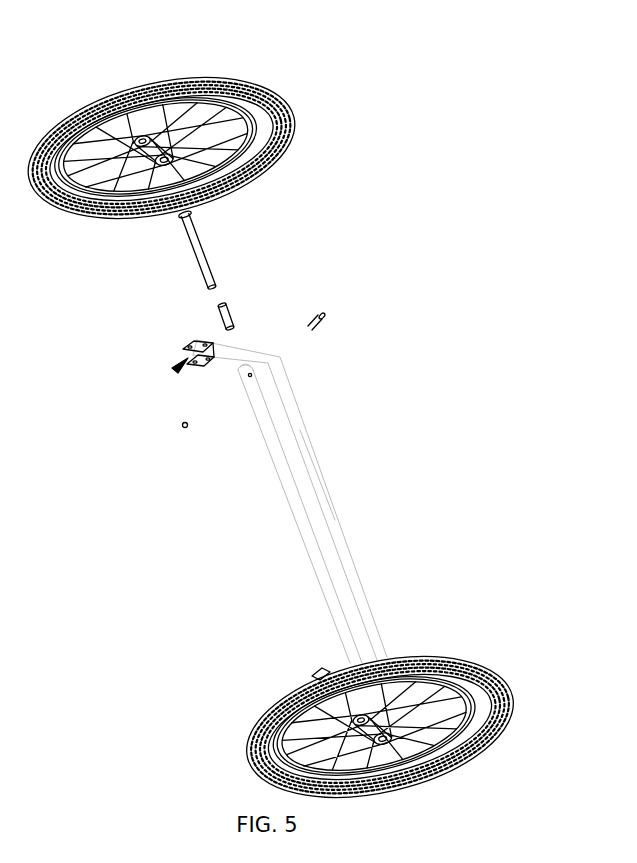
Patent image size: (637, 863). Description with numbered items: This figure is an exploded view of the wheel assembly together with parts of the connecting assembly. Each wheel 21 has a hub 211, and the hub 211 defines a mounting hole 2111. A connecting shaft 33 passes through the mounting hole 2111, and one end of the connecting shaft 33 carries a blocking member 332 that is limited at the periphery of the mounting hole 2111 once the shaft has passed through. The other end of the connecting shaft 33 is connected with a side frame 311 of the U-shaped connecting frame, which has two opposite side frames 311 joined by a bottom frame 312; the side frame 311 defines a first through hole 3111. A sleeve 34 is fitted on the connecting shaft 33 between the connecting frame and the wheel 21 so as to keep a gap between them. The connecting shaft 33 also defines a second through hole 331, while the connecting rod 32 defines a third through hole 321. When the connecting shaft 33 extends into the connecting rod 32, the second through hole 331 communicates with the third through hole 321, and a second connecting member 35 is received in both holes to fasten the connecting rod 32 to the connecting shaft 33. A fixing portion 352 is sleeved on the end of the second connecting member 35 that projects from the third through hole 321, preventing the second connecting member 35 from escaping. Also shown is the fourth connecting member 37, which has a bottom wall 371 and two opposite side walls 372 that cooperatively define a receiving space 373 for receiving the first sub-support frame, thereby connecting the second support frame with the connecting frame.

The wheel 21 is at (161, 124).
The hub 211 is at (161, 148).
The mounting hole 2111 is at (238, 80).
The connecting shaft 33 is at (194, 249).
The blocking member 332 is at (193, 213).
The second through hole 331 is at (205, 280).
The sleeve 34 is at (225, 307).
The second connecting member 35 is at (320, 323).
The connecting rod 32 is at (313, 465).
The side frame 311 is at (232, 368).
The first through hole 3111 is at (248, 365).
The third through hole 321 is at (250, 375).
The bottom frame 312 is at (337, 520).
The fourth connecting member 37 is at (153, 399).
The bottom wall 371 is at (213, 355).
The side wall 372 is at (197, 363).
The receiving space 373 is at (180, 365).
The fixing portion 352 is at (185, 428).